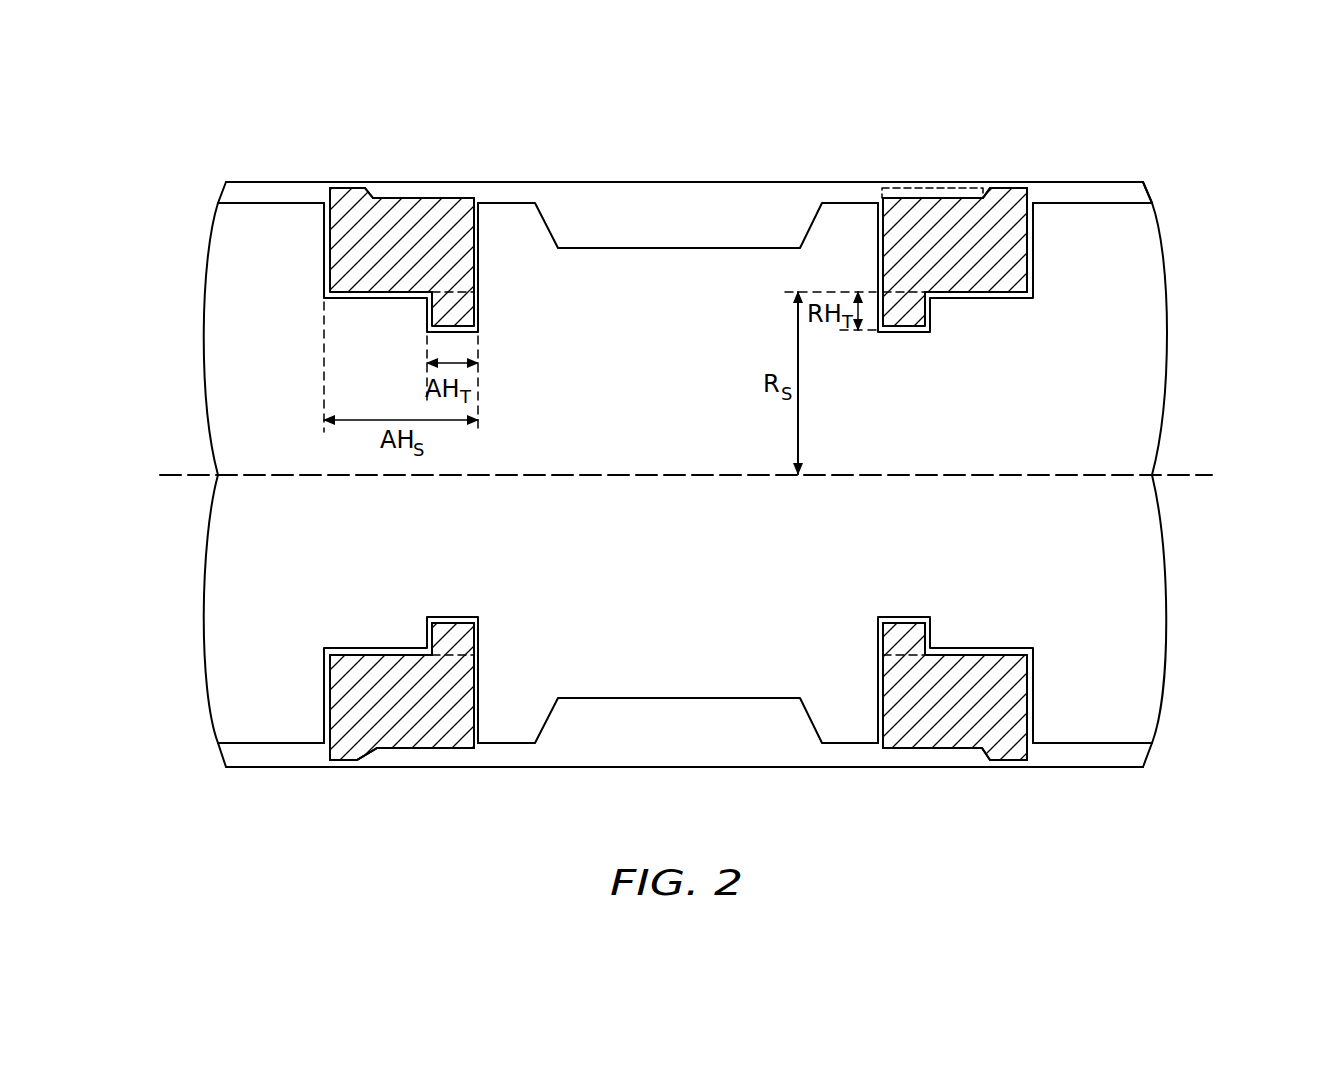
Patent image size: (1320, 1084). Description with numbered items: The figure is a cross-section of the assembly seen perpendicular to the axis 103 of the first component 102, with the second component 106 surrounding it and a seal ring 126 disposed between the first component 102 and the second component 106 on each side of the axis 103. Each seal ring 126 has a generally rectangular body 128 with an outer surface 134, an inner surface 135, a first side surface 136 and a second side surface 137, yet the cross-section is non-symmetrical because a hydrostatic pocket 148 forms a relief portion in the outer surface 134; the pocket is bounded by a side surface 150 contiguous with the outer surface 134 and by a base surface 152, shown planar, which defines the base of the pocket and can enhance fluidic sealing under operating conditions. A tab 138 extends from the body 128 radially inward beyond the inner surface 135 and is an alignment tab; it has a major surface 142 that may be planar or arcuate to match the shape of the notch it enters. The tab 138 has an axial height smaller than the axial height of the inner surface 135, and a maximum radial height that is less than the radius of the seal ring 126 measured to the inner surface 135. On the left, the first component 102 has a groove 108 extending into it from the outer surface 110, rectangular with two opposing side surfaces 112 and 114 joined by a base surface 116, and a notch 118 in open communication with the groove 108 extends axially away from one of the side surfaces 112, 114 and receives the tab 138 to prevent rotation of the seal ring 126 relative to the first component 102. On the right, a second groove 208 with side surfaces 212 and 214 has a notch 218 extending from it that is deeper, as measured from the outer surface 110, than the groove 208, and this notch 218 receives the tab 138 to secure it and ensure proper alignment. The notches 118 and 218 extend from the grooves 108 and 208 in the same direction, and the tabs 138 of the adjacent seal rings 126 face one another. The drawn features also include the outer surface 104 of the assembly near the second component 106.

The first component 102 is at (1135, 200).
The axis 103 is at (1185, 472).
The outer surface of housing 104 is at (1118, 188).
The second component 106 is at (1070, 180).
The groove 108 is at (308, 687).
The outer surface 110 is at (258, 742).
The first side surface of groove 112 is at (325, 657).
The second side surface of groove 114 is at (482, 685).
The base surface of groove 116 is at (368, 645).
The notch 118 is at (420, 629).
The seal ring 126 is at (324, 752).
The body 128 is at (411, 262).
The outer surface 134 is at (998, 190).
The inner surface 135 is at (1008, 283).
The first side surface 136 is at (1033, 258).
The second side surface 137 is at (882, 233).
The tab 138 is at (462, 308).
The major surface 142 is at (445, 622).
The hydrostatic pocket 148 is at (892, 192).
The side surface 150 is at (372, 194).
The base surface 152 is at (428, 196).
The second groove 208 is at (871, 664).
The side surface of second groove 212 is at (877, 708).
The side surface of second groove 214 is at (1033, 697).
The notch 218 is at (871, 619).